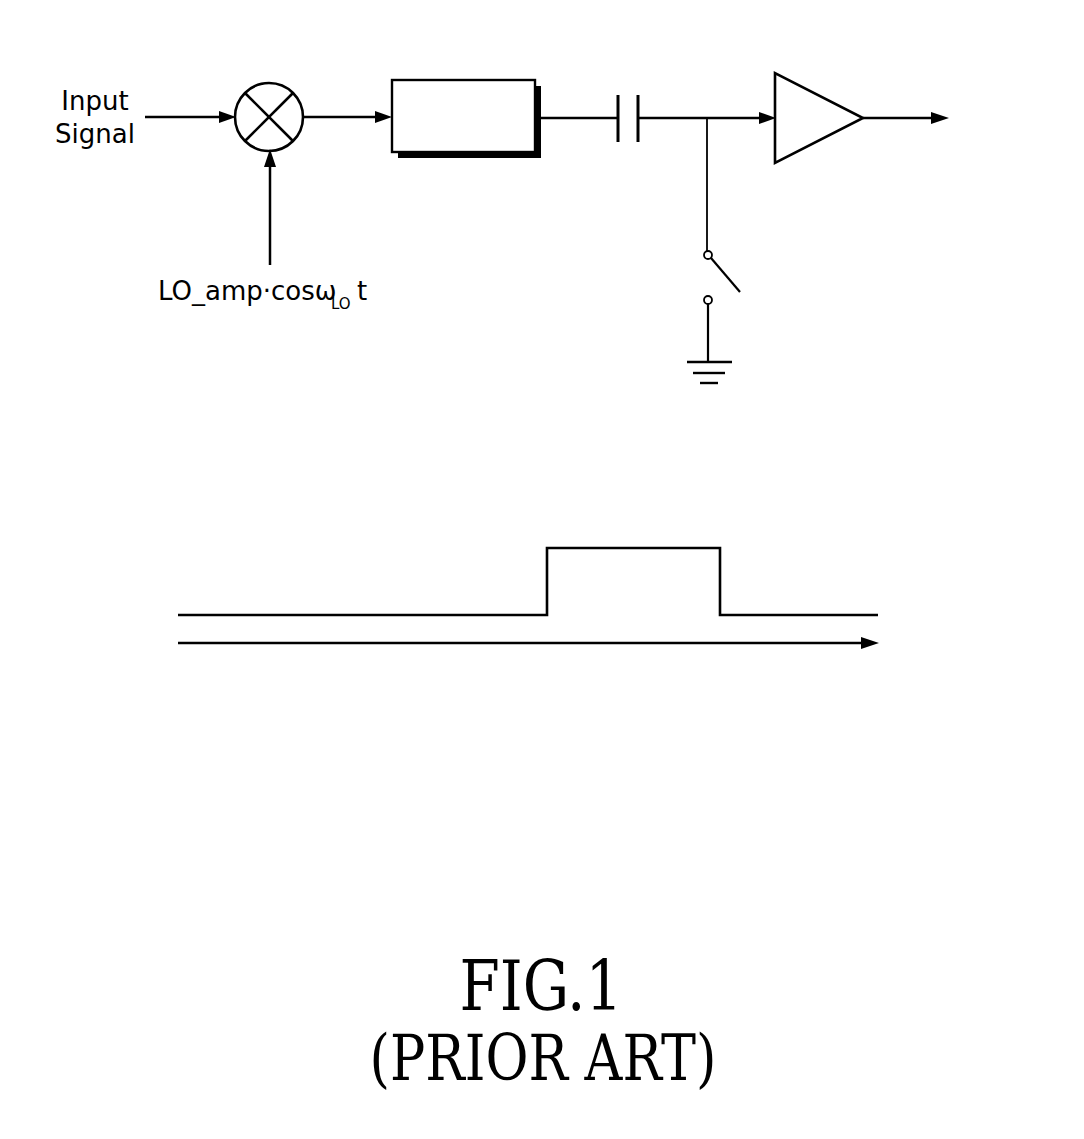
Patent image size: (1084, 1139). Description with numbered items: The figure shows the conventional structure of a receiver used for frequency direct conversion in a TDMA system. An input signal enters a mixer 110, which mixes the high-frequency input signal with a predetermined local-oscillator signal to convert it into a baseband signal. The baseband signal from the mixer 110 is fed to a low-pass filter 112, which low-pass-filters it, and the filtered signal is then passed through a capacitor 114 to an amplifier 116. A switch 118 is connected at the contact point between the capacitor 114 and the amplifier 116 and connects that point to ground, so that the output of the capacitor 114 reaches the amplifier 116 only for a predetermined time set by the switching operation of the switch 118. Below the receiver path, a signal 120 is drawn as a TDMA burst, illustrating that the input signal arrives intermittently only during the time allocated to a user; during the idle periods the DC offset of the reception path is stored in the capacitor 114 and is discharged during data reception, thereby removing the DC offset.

The mixer 110 is at (268, 83).
The low-pass filter 112 is at (462, 80).
The capacitor 114 is at (625, 88).
The amplifier 116 is at (816, 95).
The switch 118 is at (745, 270).
The signal 120 is at (763, 541).